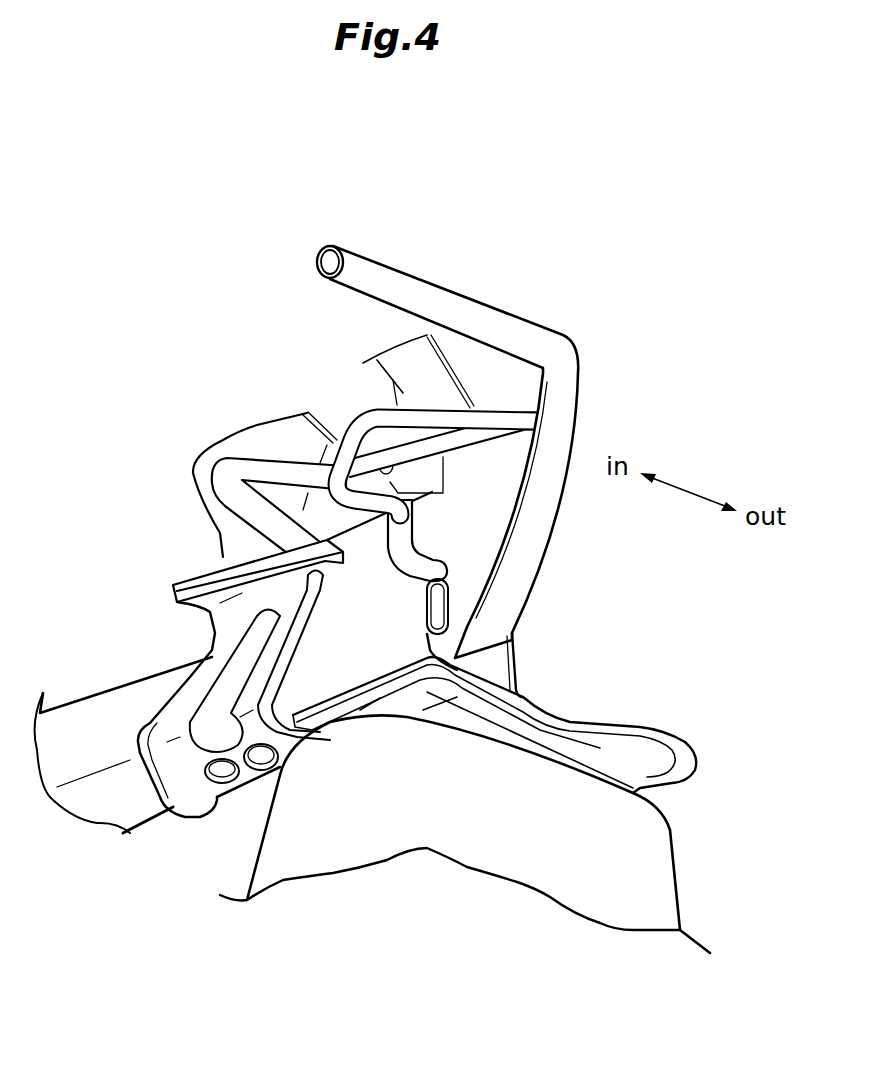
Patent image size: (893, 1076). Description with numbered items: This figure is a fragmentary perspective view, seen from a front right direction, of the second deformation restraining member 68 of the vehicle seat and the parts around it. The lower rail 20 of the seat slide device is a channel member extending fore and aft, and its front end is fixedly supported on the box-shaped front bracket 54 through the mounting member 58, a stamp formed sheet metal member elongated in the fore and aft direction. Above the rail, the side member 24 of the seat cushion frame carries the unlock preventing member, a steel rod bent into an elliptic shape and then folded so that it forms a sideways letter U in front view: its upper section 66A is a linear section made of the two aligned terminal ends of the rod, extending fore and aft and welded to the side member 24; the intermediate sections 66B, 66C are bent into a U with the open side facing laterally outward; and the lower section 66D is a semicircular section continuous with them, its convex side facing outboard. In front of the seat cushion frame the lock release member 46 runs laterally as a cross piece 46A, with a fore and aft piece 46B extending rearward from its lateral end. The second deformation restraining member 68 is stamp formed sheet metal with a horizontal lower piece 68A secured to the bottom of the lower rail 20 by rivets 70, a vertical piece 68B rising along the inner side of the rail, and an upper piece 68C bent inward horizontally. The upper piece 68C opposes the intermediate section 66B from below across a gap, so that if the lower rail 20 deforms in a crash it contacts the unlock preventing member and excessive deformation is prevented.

The lower rail 20 is at (137, 797).
The side member 24 is at (440, 387).
The lock release member 46 is at (464, 457).
The cross piece 46A is at (398, 282).
The fore and aft piece 46B is at (518, 660).
The front bracket 54 is at (660, 870).
The mounting member 58 is at (622, 750).
The upper section 66A is at (440, 469).
The intermediate section 66B is at (416, 522).
The intermediate section 66C is at (215, 527).
The lower section 66D is at (397, 583).
The second deformation restraining member 68 is at (271, 708).
The lower piece 68A is at (243, 788).
The vertical piece 68B is at (287, 648).
The upper piece 68C is at (217, 587).
The rivet 70 is at (217, 778).